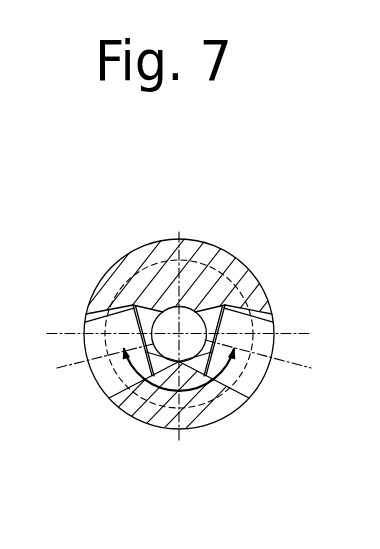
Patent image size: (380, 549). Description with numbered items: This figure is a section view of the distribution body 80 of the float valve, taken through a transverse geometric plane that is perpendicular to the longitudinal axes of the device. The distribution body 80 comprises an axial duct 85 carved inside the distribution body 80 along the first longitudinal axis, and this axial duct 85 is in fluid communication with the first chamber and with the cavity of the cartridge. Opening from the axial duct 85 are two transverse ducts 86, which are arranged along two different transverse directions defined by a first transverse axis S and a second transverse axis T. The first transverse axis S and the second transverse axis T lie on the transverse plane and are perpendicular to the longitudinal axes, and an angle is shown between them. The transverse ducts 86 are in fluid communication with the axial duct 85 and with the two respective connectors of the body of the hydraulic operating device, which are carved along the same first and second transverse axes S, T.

The collet body 80 is at (136, 257).
The central bore 85 is at (189, 320).
The jaw contact faces 86 is at (107, 376).
The inclined axis line S is at (288, 362).
The tangent line T is at (57, 368).